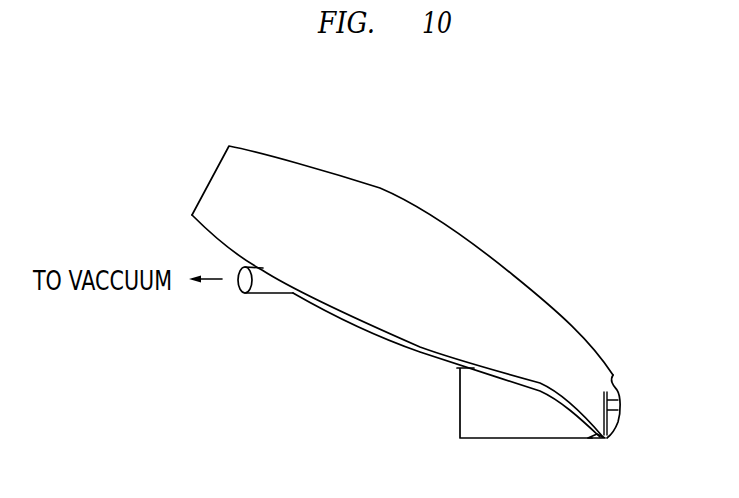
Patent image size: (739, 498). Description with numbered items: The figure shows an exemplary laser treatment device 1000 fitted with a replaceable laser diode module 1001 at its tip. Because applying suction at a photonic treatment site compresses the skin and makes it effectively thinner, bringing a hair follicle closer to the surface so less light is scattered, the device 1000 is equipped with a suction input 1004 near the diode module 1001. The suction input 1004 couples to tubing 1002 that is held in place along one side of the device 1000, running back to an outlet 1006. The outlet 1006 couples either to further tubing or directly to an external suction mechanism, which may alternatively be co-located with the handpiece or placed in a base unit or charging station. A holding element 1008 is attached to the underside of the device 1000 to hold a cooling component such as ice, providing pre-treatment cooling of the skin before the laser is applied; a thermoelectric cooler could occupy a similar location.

The laser treatment device 1000 is at (513, 275).
The replaceable laser diode module 1001 is at (615, 383).
The tubing 1002 is at (393, 345).
The suction input 1004 is at (603, 440).
The outlet 1006 is at (262, 293).
The holding element 1008 is at (498, 440).